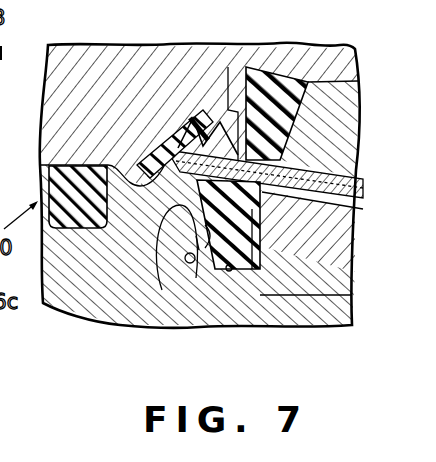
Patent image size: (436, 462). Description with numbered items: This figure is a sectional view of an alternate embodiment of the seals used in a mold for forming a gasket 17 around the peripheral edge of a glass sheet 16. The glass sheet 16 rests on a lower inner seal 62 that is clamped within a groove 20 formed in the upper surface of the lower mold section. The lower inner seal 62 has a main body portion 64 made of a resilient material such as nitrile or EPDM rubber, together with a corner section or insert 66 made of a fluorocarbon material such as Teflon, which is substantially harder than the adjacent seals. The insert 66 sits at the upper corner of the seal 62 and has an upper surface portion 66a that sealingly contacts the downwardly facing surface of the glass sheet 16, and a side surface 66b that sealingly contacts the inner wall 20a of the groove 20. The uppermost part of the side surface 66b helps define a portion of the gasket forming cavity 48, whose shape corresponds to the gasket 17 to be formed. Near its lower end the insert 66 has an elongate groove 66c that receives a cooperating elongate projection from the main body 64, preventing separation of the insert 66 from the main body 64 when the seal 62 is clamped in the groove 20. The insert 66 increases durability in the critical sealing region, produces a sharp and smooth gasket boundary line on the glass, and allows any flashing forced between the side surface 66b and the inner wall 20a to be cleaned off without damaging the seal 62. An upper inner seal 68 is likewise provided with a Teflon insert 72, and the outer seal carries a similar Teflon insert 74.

The glass sheet 16 is at (365, 179).
The gasket 17 is at (197, 120).
The groove 20 is at (252, 269).
The inner wall of the groove 20a is at (186, 215).
The gasket forming cavity 48 is at (153, 110).
The lower inner seal 62 is at (268, 248).
The main body portion 64 is at (229, 275).
The corner section or insert 66 is at (215, 197).
The upper surface portion 66a is at (167, 232).
The side surface 66b is at (185, 262).
The elongate groove 66c is at (196, 240).
The upper inner seal 68 is at (296, 57).
The Teflon insert 72 is at (238, 93).
The Teflon insert 74 is at (93, 167).